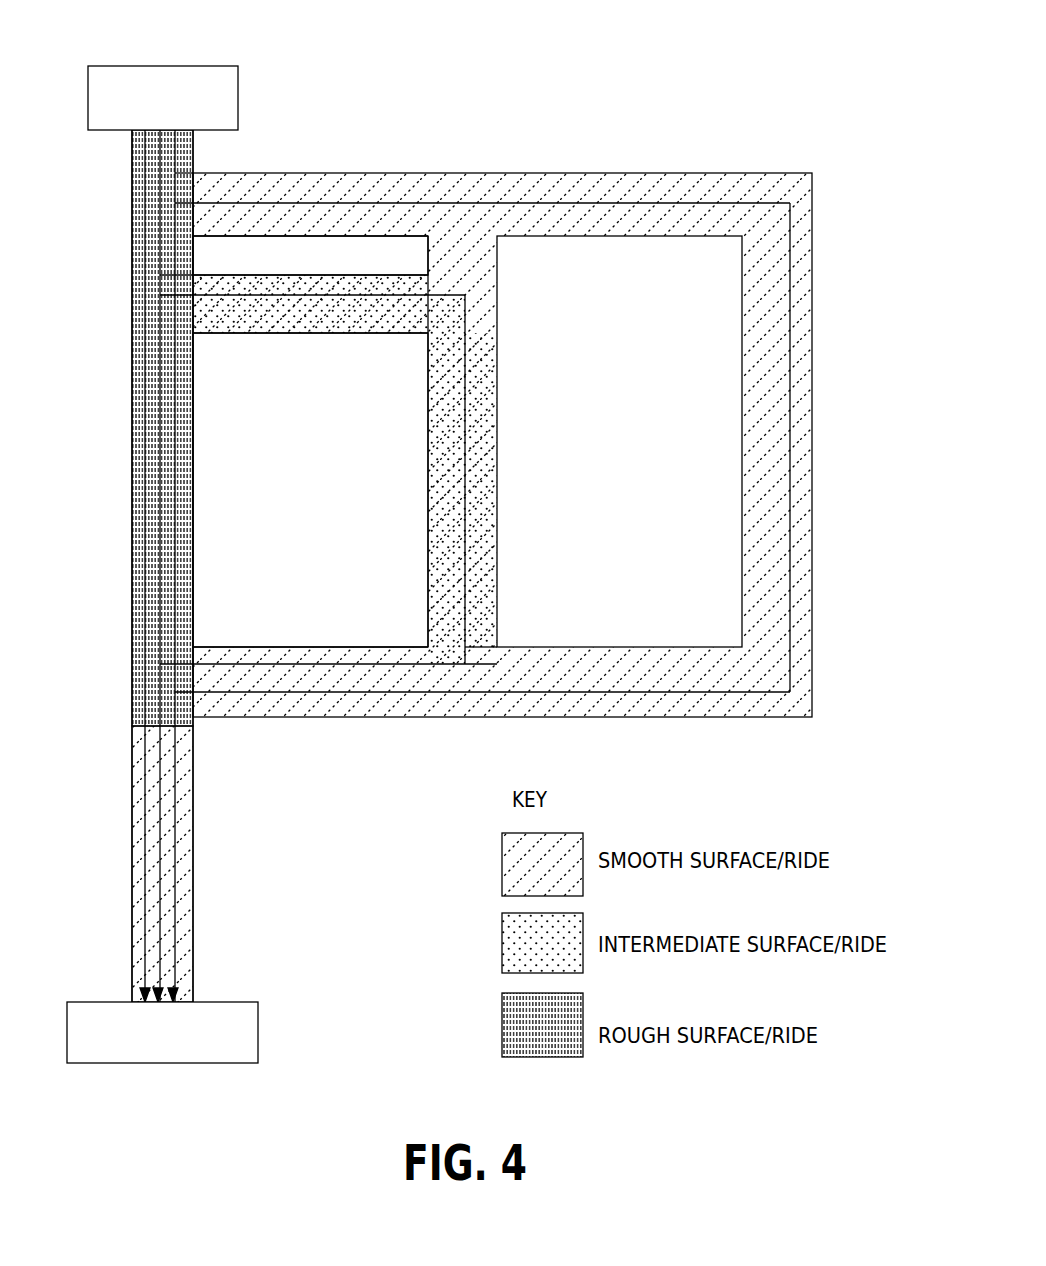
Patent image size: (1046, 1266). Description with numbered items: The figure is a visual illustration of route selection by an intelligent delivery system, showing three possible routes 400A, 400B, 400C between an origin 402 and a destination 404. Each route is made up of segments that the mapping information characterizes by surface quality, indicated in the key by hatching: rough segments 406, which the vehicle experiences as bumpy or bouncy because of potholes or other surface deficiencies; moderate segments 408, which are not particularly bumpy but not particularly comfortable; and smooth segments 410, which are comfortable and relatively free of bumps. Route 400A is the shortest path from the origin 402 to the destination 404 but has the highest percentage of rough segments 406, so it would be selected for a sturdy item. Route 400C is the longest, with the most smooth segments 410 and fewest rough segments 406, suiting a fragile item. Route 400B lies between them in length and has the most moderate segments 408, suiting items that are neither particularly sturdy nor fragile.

The origin 402 is at (213, 66).
The destination 404 is at (232, 1002).
The route 400A is at (138, 402).
The route 400B is at (160, 272).
The route 400C is at (195, 170).
The rough route segment 406 is at (163, 538).
The moderate route segment 408 is at (483, 485).
The smooth route segment 410 is at (758, 265).